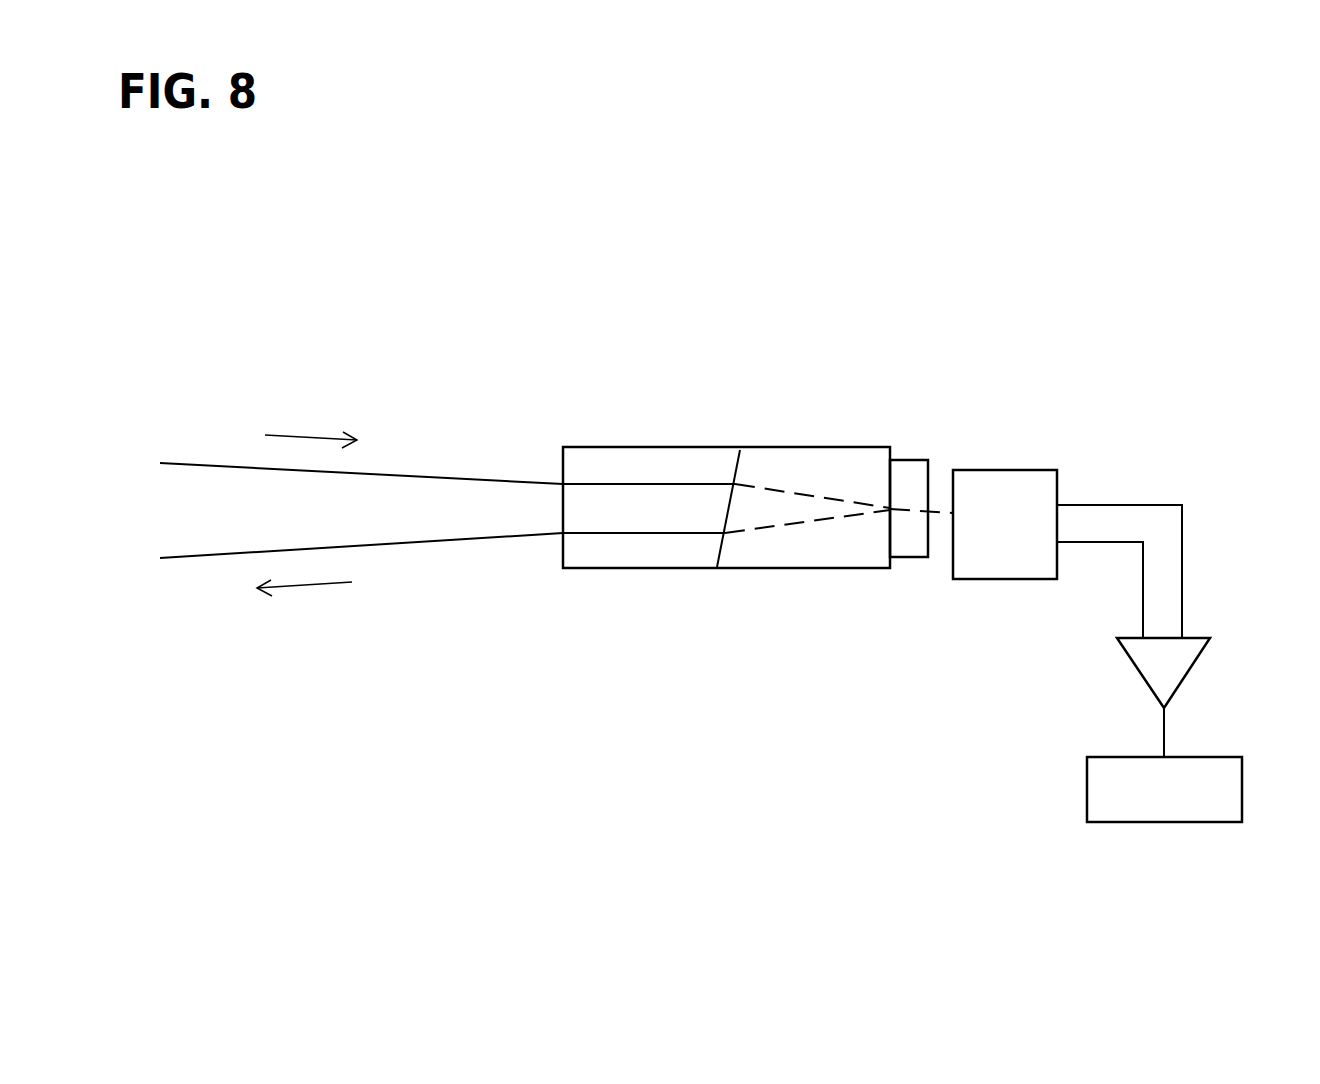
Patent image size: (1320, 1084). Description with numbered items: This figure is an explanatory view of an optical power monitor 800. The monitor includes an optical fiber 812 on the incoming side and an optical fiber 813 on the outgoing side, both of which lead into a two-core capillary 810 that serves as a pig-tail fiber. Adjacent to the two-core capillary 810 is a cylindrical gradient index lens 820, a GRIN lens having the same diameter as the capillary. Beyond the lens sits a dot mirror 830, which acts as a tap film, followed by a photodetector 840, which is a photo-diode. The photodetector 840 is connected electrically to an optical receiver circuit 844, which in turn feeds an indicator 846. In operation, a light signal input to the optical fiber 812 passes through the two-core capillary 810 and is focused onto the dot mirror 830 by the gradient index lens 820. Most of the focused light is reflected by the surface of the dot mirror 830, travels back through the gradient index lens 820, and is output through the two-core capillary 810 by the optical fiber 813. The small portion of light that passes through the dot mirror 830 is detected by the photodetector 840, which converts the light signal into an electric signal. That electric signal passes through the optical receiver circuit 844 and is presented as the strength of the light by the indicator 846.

The optical power monitor 800 is at (605, 743).
The two-core capillary 810 is at (597, 473).
The optical fiber on the incoming side 812 is at (200, 463).
The optical fiber on the outgoing side 813 is at (223, 560).
The cylindrical gradient index lens 820 is at (773, 477).
The dot mirror 830 is at (907, 483).
The photodetector 840 is at (988, 507).
The optical receiver circuit 844 is at (1150, 662).
The indicator 846 is at (1138, 800).